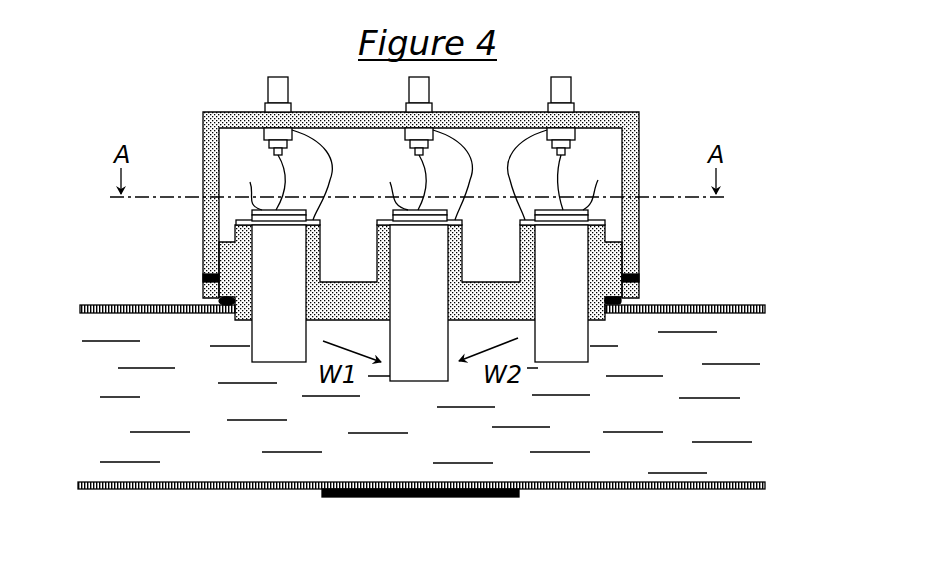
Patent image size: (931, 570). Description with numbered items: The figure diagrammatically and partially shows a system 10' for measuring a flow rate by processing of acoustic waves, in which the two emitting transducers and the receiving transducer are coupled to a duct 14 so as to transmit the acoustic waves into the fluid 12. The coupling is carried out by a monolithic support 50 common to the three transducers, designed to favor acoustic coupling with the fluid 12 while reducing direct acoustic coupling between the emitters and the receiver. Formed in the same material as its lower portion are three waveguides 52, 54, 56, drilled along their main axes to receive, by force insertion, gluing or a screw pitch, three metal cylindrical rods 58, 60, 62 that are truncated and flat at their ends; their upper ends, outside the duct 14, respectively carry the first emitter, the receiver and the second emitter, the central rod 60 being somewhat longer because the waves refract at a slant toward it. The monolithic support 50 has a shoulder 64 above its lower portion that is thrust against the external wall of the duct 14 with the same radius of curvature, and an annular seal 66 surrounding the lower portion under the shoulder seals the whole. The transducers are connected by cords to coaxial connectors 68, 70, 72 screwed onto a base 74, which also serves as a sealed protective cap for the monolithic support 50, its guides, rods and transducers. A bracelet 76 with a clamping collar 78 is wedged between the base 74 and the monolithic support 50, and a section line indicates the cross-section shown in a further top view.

The system for measuring a flow rate 10' is at (421, 197).
The fluid 12 is at (186, 417).
The duct 14 is at (764, 313).
The monolithic support 50 is at (233, 263).
The waveguide 52 is at (320, 256).
The waveguide 54 is at (462, 240).
The waveguide 56 is at (523, 236).
The cylindrical rod 58 is at (297, 291).
The cylindrical rod 60 is at (437, 291).
The cylindrical rod 62 is at (580, 291).
The shoulder 64 is at (640, 296).
The annular seal 66 is at (630, 300).
The coaxial connector 68 is at (268, 93).
The coaxial connector 70 is at (409, 93).
The coaxial connector 72 is at (551, 93).
The base 74 is at (212, 135).
The bracelet 76 is at (203, 279).
The clamping collar 78 is at (519, 493).